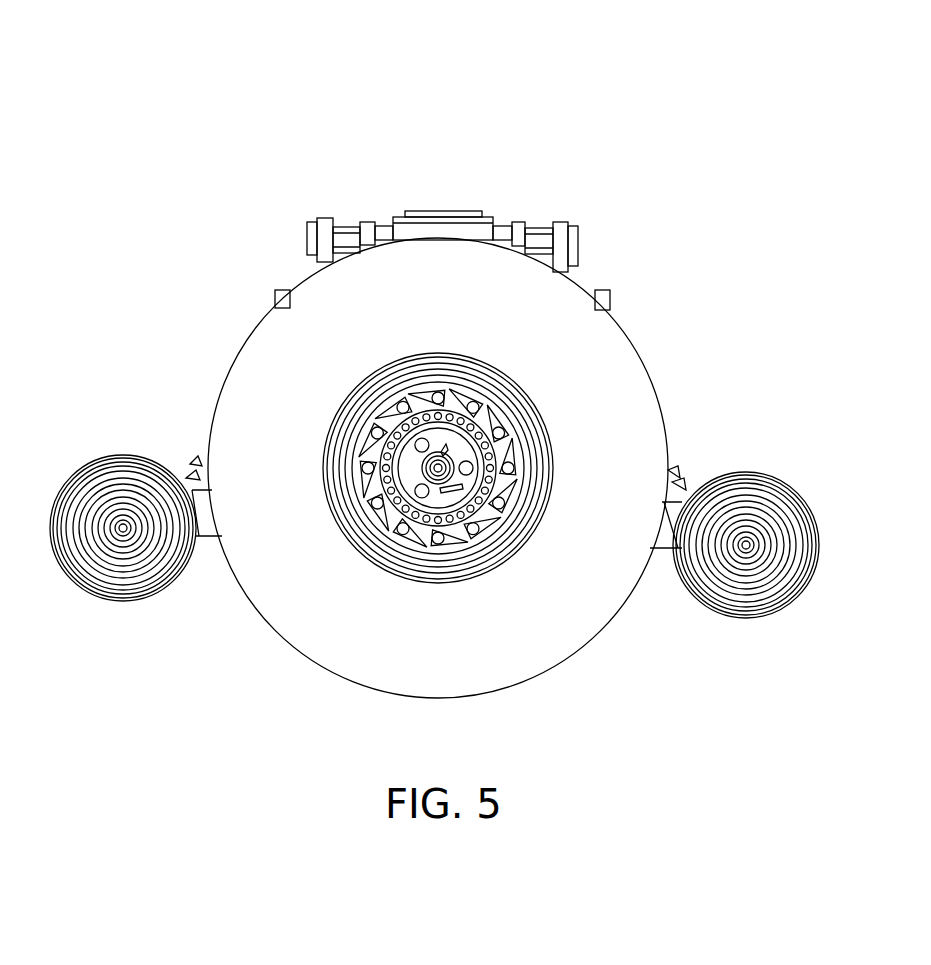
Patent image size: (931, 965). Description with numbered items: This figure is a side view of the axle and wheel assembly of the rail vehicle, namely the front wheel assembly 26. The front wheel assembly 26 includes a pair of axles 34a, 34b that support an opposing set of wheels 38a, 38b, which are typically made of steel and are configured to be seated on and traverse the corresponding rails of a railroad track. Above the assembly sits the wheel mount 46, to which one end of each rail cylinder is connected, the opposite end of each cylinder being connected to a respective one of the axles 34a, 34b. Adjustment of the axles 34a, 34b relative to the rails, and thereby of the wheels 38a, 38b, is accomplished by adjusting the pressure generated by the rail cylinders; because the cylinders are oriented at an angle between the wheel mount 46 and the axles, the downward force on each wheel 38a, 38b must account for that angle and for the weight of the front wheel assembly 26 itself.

The front wheel assembly 26 is at (516, 105).
The wheel mount 46 is at (433, 211).
The axle 34a is at (746, 543).
The axle 34b is at (125, 527).
The wheel 38a is at (744, 618).
The wheel 38b is at (120, 601).